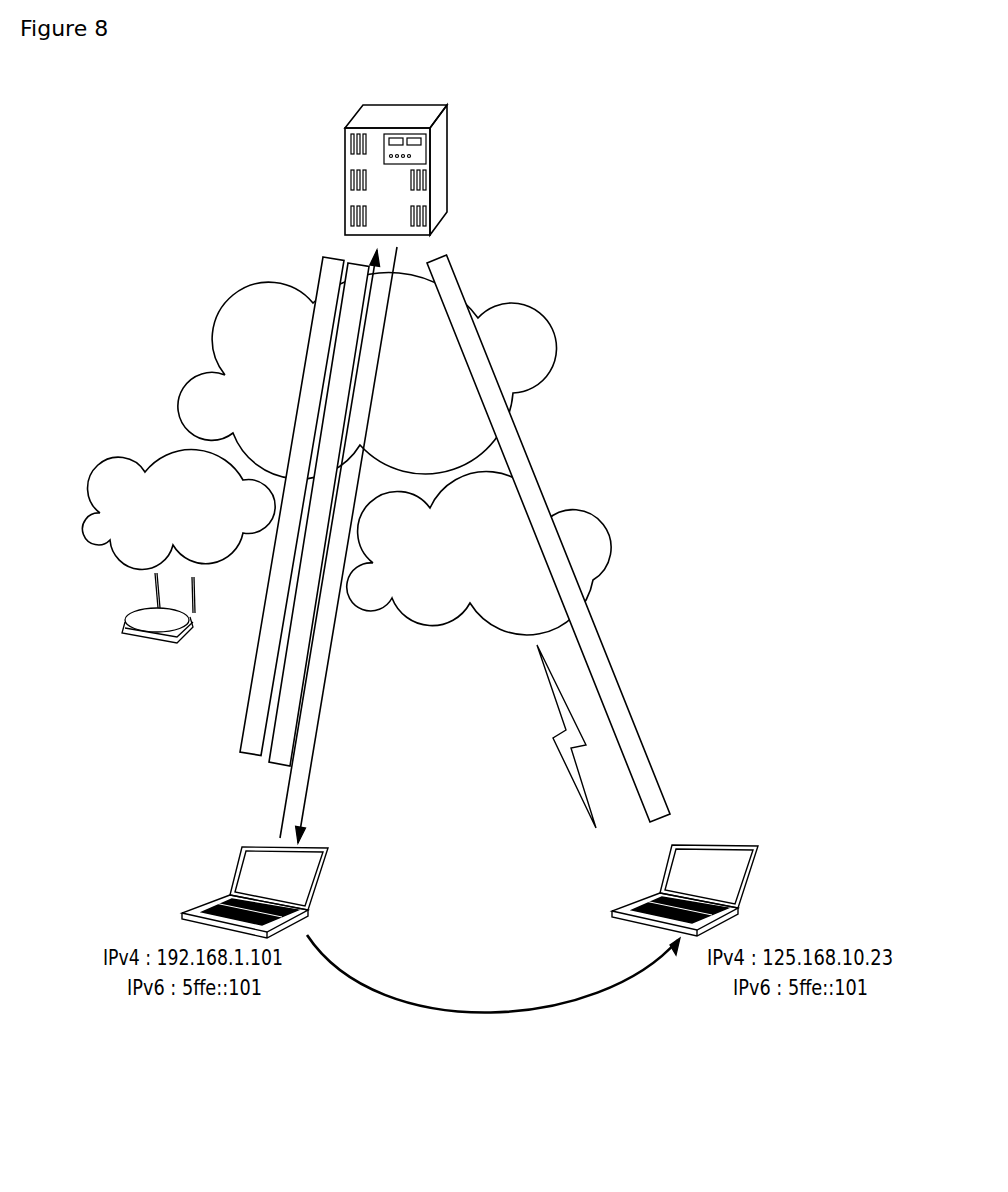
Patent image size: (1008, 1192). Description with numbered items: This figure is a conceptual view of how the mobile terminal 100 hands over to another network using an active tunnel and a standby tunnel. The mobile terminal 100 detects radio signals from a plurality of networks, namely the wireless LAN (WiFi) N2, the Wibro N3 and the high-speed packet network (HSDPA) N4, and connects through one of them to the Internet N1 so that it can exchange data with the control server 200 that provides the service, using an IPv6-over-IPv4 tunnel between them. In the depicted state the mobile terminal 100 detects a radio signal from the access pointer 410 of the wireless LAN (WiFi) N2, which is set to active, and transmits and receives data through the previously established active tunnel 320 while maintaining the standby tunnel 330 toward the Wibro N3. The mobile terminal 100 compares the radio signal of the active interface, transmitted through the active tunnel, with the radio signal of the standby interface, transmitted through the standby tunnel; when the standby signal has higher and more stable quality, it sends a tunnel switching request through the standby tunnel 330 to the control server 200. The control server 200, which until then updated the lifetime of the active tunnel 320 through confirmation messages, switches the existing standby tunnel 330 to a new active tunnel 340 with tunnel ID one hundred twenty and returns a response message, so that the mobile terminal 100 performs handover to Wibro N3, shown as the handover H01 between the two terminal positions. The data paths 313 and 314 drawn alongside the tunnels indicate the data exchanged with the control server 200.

The mobile terminal 100 is at (310, 840).
The control server 200 is at (433, 166).
The data path line 313 is at (310, 683).
The data path line 314 is at (330, 653).
The active tunnel 320 is at (247, 757).
The standby tunnel 330 is at (277, 767).
The new active tunnel 340 is at (660, 748).
The access pointer 410 is at (143, 637).
The Internet N1 is at (545, 373).
The wireless LAN (WiFi) N2 is at (98, 541).
The Wibro N3 is at (513, 553).
The high-speed packet network (HSDPA) N4 is at (593, 582).
The handover H01 is at (623, 990).